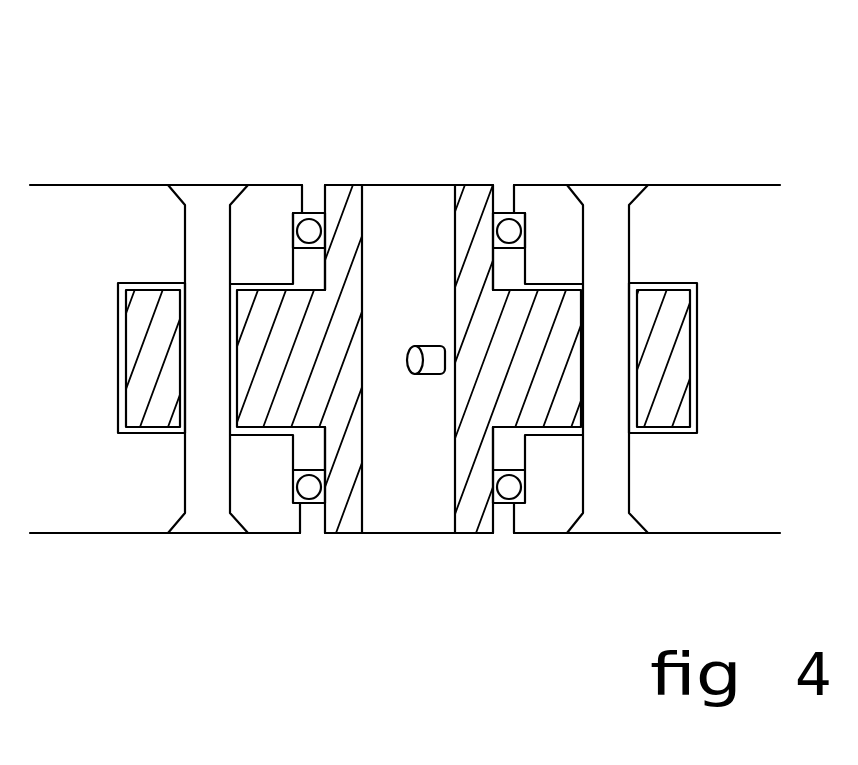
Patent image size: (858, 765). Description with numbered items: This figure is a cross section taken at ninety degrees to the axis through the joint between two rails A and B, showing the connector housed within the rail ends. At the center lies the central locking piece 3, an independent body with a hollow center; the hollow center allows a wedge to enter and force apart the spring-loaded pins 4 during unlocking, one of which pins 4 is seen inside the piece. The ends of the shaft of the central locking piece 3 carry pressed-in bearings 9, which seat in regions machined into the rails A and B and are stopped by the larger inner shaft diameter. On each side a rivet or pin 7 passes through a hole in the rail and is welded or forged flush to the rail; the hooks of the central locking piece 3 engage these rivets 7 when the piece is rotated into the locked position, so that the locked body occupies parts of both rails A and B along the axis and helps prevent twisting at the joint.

The central locking piece 3 is at (435, 235).
The pin 4 is at (422, 377).
The rivet or pin 7 is at (210, 250).
The bearing 9 is at (503, 488).
The rail A is at (103, 483).
The rail B is at (720, 230).